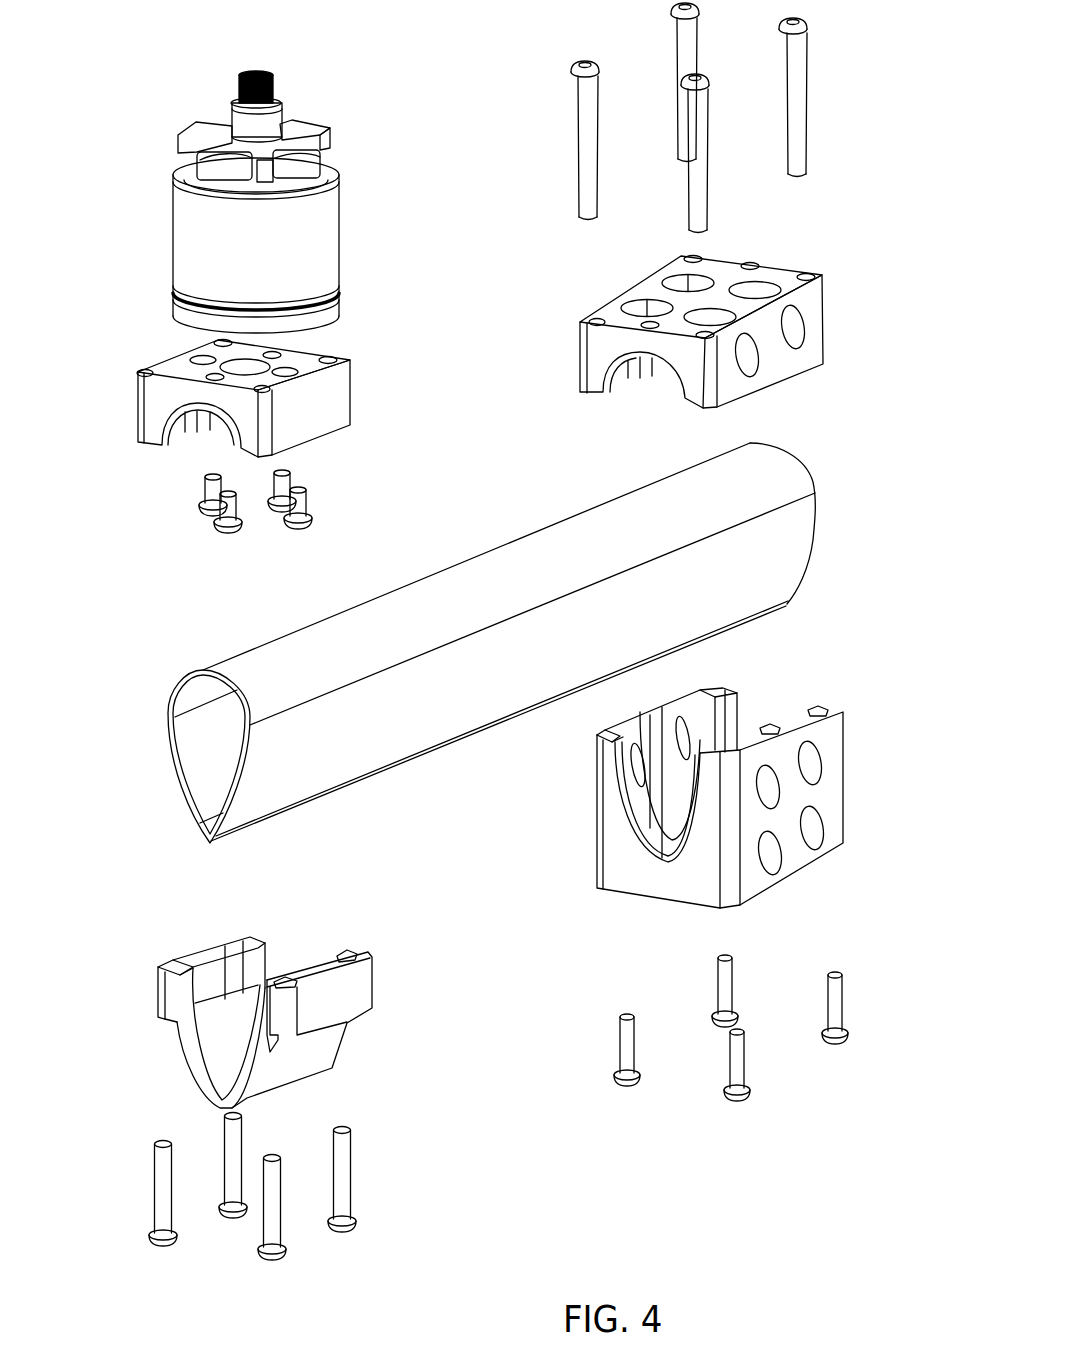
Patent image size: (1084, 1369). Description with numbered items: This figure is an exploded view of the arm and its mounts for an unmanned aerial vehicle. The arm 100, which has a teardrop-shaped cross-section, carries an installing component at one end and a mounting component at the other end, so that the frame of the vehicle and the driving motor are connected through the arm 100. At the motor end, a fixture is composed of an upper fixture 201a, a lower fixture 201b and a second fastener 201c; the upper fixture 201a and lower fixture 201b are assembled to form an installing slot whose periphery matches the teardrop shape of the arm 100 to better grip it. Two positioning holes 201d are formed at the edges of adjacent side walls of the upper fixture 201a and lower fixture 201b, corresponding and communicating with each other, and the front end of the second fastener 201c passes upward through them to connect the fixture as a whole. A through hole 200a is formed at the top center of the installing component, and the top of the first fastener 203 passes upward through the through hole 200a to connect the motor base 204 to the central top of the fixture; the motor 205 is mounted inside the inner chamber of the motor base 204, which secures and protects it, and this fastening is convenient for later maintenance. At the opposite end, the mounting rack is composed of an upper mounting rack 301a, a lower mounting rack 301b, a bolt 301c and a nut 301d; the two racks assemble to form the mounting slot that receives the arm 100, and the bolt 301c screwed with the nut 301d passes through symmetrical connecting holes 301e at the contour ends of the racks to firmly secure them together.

The arm 100 is at (558, 569).
The through hole 200a is at (187, 358).
The upper fixture 201a is at (160, 402).
The lower fixture 201b is at (222, 1032).
The second fastener 201c is at (345, 1200).
The positioning holes 201d is at (367, 950).
The first fastener 203 is at (206, 517).
The motor base 204 is at (215, 251).
The motor 205 is at (240, 123).
The upper mounting rack 301a is at (812, 355).
The lower mounting rack 301b is at (825, 797).
The bolt 301c is at (797, 116).
The nut 301d is at (835, 1000).
The connecting holes 301e is at (808, 277).